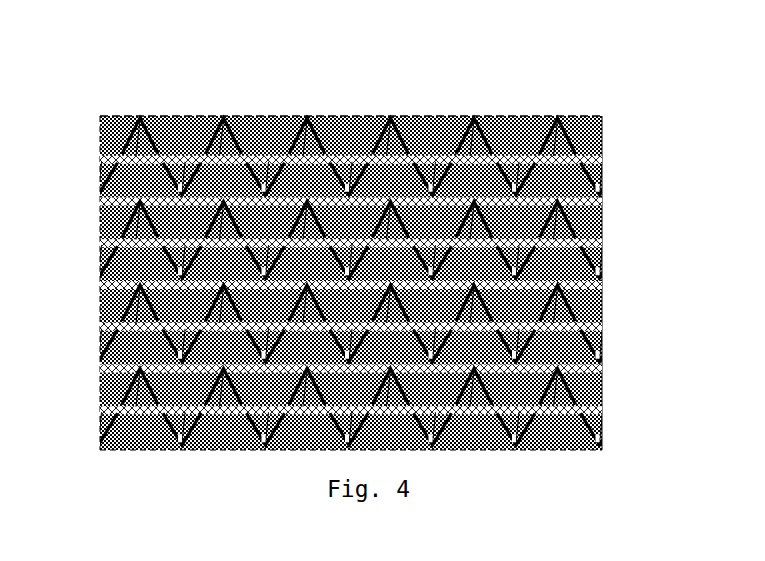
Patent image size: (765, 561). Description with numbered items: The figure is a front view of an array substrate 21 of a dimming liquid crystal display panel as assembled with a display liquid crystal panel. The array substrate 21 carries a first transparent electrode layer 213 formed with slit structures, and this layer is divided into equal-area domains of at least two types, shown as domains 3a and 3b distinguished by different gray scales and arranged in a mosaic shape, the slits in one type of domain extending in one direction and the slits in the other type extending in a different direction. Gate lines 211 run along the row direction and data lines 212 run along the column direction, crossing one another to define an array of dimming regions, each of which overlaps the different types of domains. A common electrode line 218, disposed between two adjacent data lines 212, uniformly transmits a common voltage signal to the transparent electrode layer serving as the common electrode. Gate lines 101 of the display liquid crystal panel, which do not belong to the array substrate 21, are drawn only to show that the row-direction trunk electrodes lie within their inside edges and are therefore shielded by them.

The array substrate 21 is at (328, 88).
The domain 3a is at (121, 140).
The domain 3b is at (148, 140).
The gate line 101 is at (349, 303).
The gate line 211 is at (349, 304).
The data line 212 is at (535, 117).
The first transparent electrode layer 213 is at (583, 117).
The common electrode line 218 is at (569, 132).